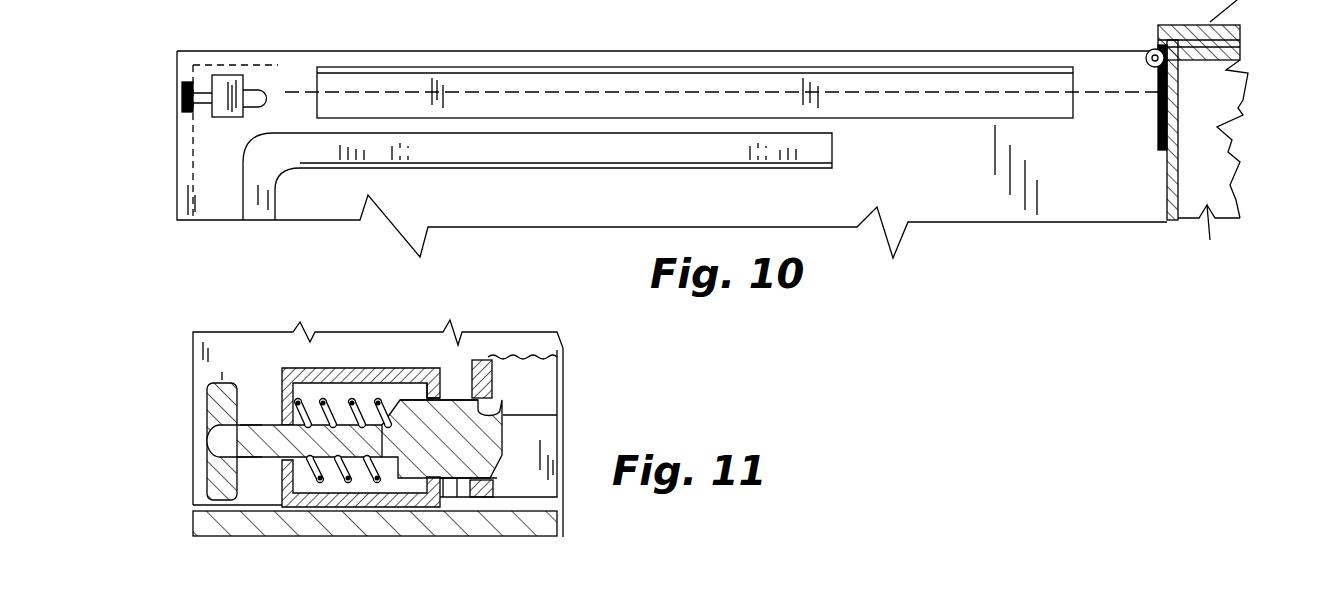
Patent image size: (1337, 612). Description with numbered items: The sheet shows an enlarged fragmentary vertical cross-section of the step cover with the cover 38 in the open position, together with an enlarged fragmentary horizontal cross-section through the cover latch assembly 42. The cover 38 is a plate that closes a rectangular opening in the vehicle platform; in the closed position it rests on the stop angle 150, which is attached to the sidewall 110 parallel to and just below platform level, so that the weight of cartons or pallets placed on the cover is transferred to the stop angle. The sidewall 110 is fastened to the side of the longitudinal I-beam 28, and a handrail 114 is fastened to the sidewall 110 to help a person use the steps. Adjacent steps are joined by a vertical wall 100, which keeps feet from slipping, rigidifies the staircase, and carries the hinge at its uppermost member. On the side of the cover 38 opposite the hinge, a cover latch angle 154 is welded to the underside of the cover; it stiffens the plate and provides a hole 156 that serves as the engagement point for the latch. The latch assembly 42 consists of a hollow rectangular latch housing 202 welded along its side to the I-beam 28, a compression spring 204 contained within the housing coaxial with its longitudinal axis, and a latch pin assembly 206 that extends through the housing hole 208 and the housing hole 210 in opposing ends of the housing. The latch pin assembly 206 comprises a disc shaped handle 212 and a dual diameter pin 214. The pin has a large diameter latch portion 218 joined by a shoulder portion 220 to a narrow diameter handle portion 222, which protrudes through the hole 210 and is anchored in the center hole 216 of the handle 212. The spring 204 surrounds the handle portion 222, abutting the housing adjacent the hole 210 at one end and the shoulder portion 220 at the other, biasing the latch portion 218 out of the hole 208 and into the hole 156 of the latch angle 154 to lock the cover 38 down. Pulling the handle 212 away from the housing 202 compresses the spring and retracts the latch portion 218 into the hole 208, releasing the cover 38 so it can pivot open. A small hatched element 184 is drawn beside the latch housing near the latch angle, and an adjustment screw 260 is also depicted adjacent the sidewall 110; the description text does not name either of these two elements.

In FIG. 10, the longitudinal I-beam 28 is at (1217, 125).
In FIG. 11, the cover 38 is at (200, 352).
In FIG. 11, the cover latch assembly 42 is at (395, 354).
In FIG. 10, the vertical wall 100 is at (1180, 181).
In FIG. 10, the sidewall 110 is at (212, 148).
In FIG. 11, the sidewall 110 is at (200, 521).
In FIG. 10, the handrail 114 is at (250, 182).
In FIG. 10, the stop angle 150 is at (505, 70).
In FIG. 11, the cover latch angle 154 is at (490, 487).
In FIG. 11, the hole 156 is at (507, 415).
In FIG. 11, the pad 184 is at (490, 360).
In FIG. 11, the latch housing 202 is at (293, 368).
In FIG. 11, the compression spring 204 is at (327, 397).
In FIG. 11, the latch pin assembly 206 is at (465, 390).
In FIG. 11, the housing hole 208 is at (455, 383).
In FIG. 11, the housing hole 210 is at (253, 425).
In FIG. 11, the disc shaped handle 212 is at (218, 383).
In FIG. 11, the dual diameter pin 214 is at (505, 443).
In FIG. 11, the center hole 216 is at (208, 438).
In FIG. 11, the large diameter latch portion 218 is at (452, 497).
In FIG. 11, the shoulder portion 220 is at (367, 497).
In FIG. 11, the narrow diameter handle portion 222 is at (250, 457).
In FIG. 10, the adjustment screw 260 is at (170, 112).